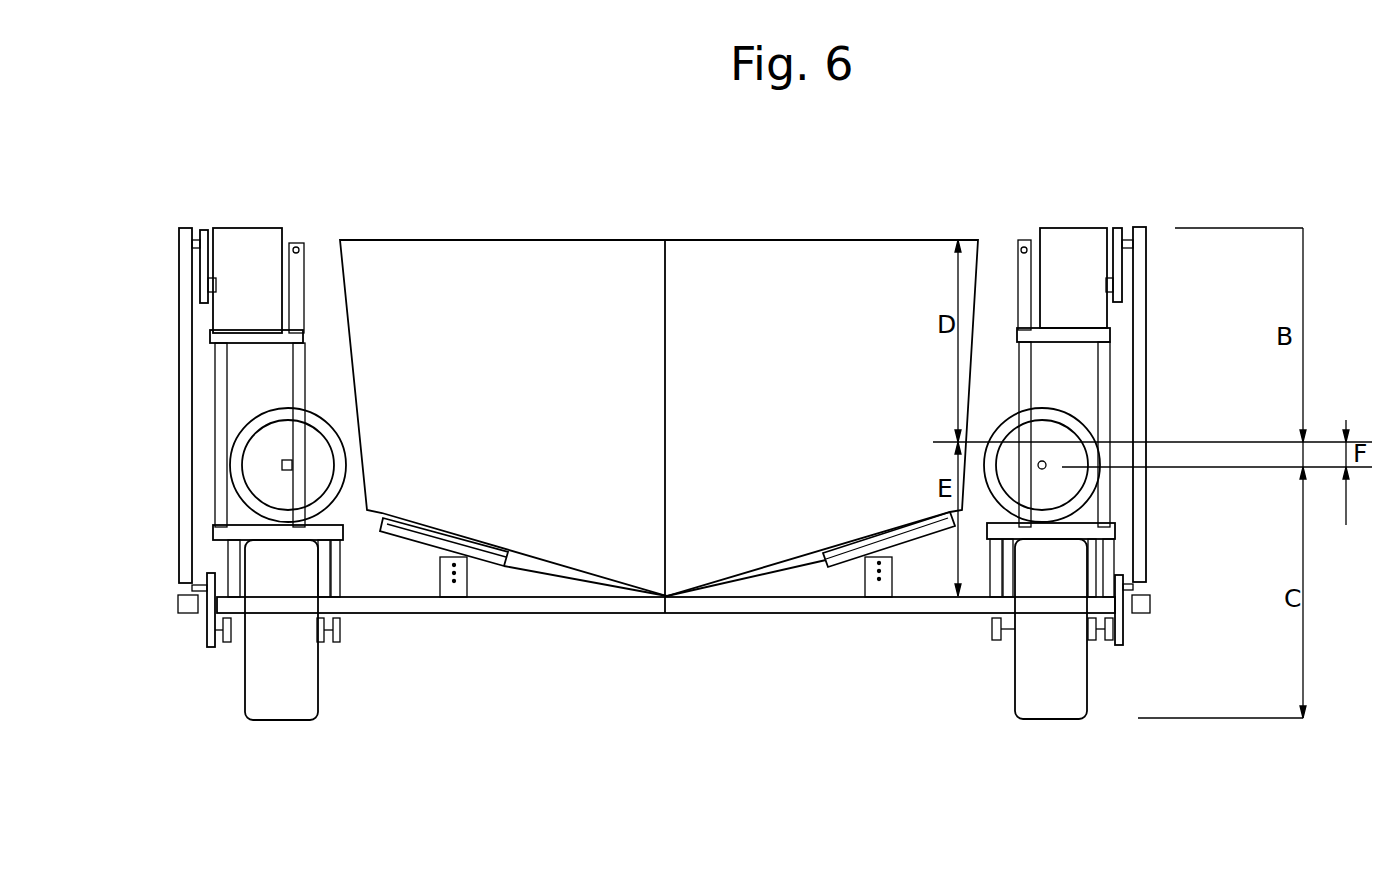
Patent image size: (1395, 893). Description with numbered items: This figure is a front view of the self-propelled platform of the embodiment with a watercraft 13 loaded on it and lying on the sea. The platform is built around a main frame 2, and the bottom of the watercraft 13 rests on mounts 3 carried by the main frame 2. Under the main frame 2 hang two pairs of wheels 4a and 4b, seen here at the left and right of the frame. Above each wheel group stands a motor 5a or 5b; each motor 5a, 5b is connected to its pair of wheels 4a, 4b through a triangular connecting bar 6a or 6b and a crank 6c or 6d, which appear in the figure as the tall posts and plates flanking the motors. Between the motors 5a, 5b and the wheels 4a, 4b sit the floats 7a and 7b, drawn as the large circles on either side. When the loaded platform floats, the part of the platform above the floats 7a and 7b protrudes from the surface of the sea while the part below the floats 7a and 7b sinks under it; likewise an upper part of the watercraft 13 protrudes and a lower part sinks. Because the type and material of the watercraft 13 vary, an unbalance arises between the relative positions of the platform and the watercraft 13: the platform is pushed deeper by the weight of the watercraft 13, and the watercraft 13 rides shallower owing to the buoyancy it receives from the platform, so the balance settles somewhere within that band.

The main frame 2 is at (437, 614).
The mount 3 is at (560, 580).
The wheels 4a is at (1015, 680).
The wheels 4b is at (244, 668).
The motor 5a is at (1070, 232).
The motor 5b is at (245, 228).
The triangular connecting bar 6a is at (1147, 278).
The triangular connecting bar 6b is at (179, 238).
The crank 6c is at (1117, 230).
The crank 6d is at (203, 230).
The float 7a is at (1073, 412).
The float 7b is at (240, 426).
The watercraft 13 is at (522, 240).